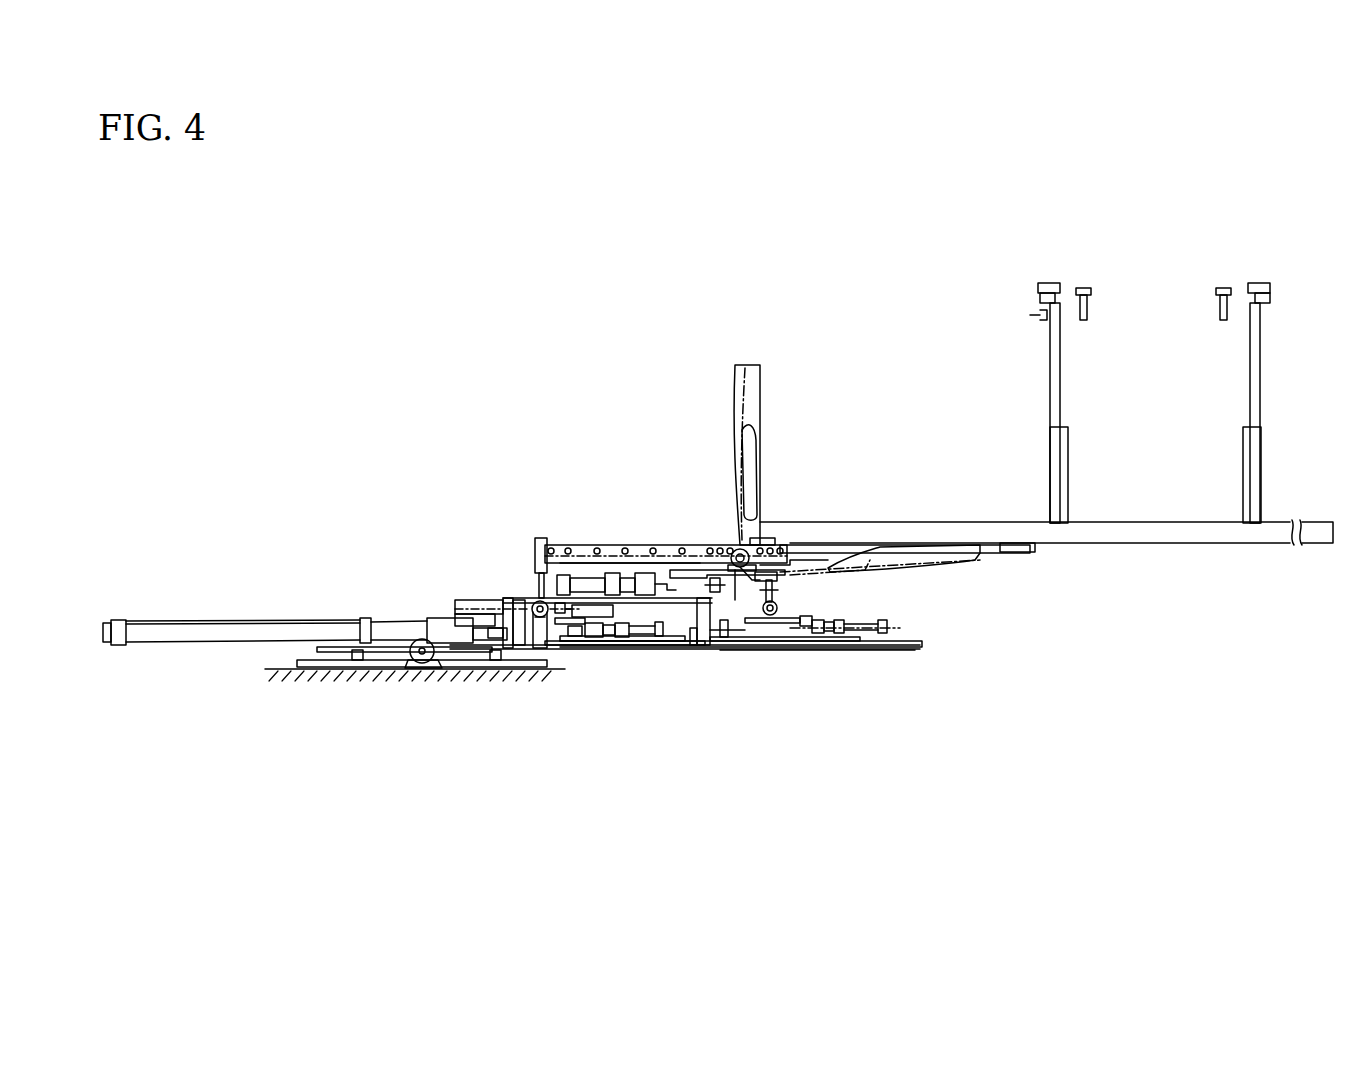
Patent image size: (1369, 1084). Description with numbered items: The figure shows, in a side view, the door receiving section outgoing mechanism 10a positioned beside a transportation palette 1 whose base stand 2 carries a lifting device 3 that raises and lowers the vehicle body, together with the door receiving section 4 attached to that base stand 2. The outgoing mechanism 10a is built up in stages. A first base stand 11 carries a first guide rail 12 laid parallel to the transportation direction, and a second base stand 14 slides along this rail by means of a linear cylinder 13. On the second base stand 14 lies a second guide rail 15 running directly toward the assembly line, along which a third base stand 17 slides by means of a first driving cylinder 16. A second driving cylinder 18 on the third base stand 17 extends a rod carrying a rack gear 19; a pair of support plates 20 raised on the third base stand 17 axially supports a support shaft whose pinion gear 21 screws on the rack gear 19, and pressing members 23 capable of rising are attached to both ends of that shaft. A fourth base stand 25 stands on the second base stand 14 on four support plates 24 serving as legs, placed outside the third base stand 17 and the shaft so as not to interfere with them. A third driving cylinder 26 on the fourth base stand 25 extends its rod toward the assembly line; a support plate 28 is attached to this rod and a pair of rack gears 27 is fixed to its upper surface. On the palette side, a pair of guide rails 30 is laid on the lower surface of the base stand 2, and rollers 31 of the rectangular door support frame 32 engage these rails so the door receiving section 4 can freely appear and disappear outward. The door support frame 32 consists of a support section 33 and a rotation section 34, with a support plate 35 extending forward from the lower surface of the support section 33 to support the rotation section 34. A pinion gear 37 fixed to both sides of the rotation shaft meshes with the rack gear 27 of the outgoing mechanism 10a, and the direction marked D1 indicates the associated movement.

The transportation palette 1 is at (1103, 432).
The base stand 2 is at (1143, 533).
The lifting device 3 is at (1003, 405).
The door receiving section 4 is at (618, 478).
The door receiving section outgoing mechanism 10a is at (370, 705).
The first base stand 11 is at (528, 665).
The first guide rail 12 is at (498, 660).
The linear cylinder 13 is at (422, 664).
The second base stand 14 is at (896, 650).
The second guide rail 15 is at (668, 648).
The first driving cylinder 16 is at (238, 632).
The third base stand 17 is at (645, 640).
The second driving cylinder 18 is at (628, 638).
The rack gear 19 is at (558, 640).
The support plate 20 is at (530, 628).
The pinion gear 21 is at (538, 617).
The pressing member 23 is at (539, 540).
The support plate 24 is at (514, 605).
The fourth base stand 25 is at (686, 625).
The third driving cylinder 26 is at (632, 580).
The rack gear 27 is at (690, 568).
The support plate 28 is at (727, 580).
The guide rail 30 is at (830, 545).
The roller 31 is at (597, 550).
The door support frame 32 is at (590, 480).
The support section 33 is at (788, 560).
The rotation section 34 is at (575, 553).
The support plate 35 is at (760, 548).
The pinion gear 37 is at (757, 585).
The direction D1 is at (748, 404).